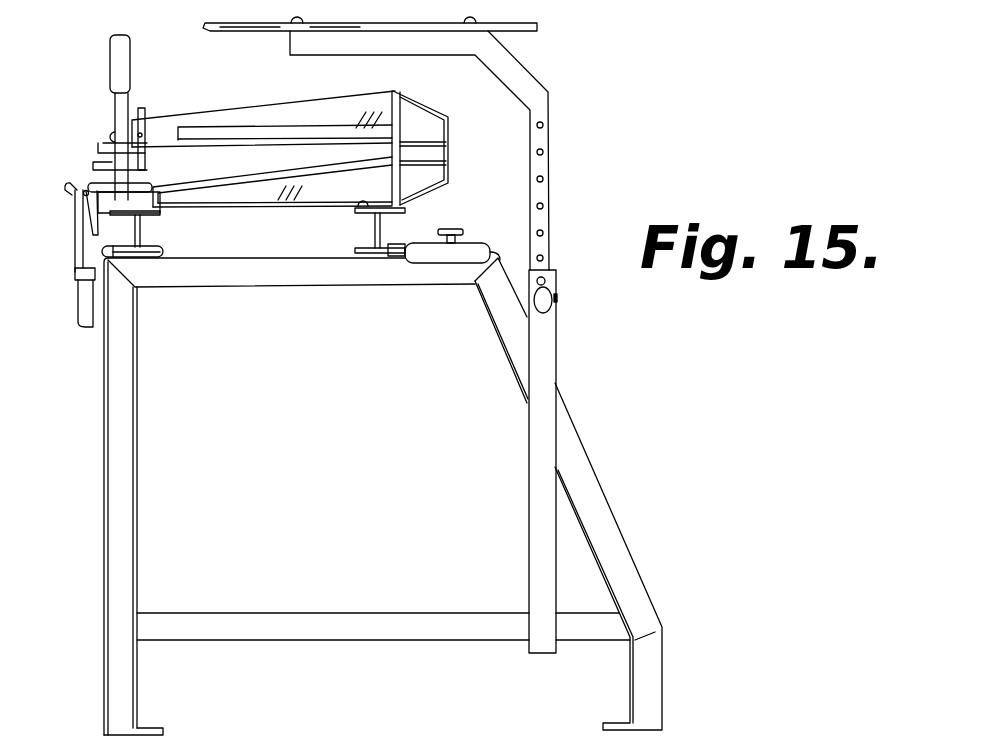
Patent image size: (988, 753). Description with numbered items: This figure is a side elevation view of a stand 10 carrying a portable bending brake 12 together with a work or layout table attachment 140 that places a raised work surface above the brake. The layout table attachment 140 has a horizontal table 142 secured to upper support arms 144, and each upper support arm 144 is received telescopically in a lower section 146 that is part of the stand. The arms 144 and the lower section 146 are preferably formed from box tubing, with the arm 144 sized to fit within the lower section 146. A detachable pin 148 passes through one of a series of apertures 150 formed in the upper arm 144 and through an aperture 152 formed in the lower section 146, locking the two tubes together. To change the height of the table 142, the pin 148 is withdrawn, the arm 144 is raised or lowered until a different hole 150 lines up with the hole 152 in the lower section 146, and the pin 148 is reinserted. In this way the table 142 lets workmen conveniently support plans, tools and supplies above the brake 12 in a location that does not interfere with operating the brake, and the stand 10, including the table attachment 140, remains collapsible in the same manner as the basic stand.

The stand 10 is at (262, 641).
The brake 12 is at (427, 150).
The layout table attachment 140 is at (552, 100).
The horizontal table 142 is at (524, 32).
The upper support arms 144 is at (541, 135).
The lower section 146 is at (542, 488).
The detachable pin 148 is at (552, 281).
The apertures 150 is at (542, 206).
The aperture 152 is at (538, 280).